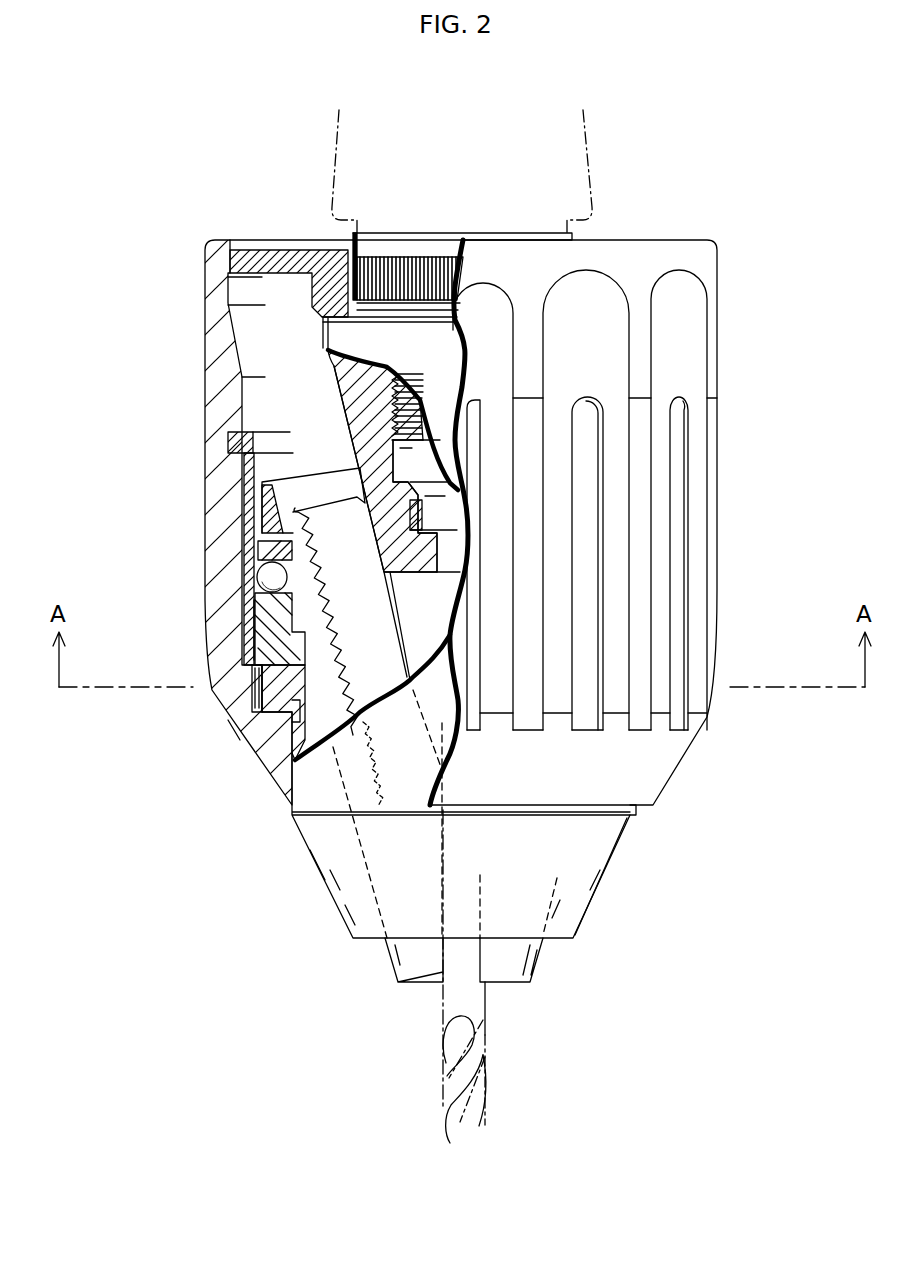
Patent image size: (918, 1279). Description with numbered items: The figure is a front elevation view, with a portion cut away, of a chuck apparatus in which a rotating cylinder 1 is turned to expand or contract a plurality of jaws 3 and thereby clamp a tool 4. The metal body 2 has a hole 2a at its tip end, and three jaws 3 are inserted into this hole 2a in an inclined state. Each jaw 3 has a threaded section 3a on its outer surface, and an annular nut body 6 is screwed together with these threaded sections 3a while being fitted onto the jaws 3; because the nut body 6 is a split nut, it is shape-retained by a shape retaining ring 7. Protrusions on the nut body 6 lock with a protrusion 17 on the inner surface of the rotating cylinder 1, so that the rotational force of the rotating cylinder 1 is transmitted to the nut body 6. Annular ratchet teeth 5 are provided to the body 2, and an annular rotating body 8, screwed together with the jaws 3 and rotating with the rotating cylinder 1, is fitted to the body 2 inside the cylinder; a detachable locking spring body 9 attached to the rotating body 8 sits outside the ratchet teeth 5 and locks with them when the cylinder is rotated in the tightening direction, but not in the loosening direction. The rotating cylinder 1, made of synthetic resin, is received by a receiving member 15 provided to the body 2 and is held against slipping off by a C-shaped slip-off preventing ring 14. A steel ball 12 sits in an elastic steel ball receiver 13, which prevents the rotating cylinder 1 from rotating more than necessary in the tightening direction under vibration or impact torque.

The rotating cylinder 1 is at (712, 302).
The body 2 is at (328, 880).
The hole 2a is at (292, 805).
The jaws 3 is at (405, 970).
The threaded section 3a is at (282, 775).
The tool 4 is at (446, 1108).
The annular ratchet teeth 5 is at (262, 733).
The nut body 6 is at (262, 638).
The shape retaining ring 7 is at (250, 512).
The rotating body 8 is at (233, 622).
The locking spring body 9 is at (212, 706).
The steel ball 12 is at (264, 576).
The steel ball receiver 13 is at (262, 549).
The slip-off preventing ring 14 is at (233, 441).
The receiving member 15 is at (262, 250).
The protrusion 17 is at (228, 728).